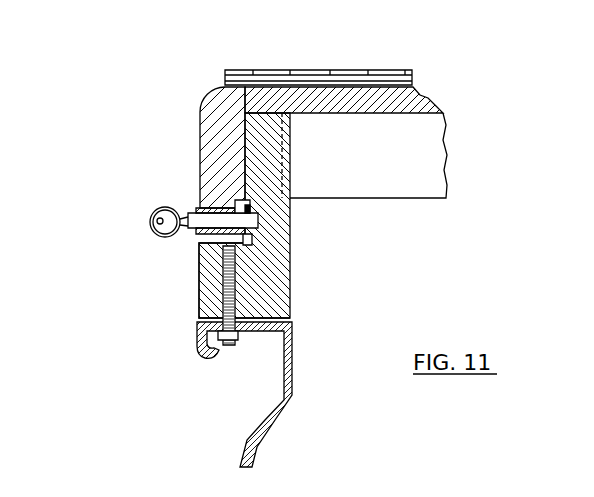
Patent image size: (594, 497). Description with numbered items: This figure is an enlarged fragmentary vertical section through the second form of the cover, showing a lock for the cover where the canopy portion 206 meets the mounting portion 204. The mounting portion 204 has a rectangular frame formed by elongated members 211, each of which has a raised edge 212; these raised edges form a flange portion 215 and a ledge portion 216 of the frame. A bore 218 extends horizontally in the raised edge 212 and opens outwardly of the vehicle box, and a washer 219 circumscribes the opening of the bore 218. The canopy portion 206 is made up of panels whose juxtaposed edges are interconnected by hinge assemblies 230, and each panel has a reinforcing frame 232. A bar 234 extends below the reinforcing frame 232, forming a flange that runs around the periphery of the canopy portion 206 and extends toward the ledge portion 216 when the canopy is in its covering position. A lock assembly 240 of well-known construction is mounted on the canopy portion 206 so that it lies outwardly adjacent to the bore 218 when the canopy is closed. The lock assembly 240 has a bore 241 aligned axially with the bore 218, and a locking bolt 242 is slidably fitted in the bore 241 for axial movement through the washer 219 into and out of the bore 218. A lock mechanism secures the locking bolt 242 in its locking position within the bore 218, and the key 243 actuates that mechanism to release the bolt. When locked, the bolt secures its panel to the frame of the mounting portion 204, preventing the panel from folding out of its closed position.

The mounting portion 204 is at (187, 302).
The canopy portion 206 is at (177, 93).
The elongated member 211 is at (270, 270).
The raised edge 212 is at (268, 212).
The flange portion 215 is at (266, 205).
The ledge portion 216 is at (203, 243).
The bore 218 is at (272, 226).
The washer 219 is at (275, 243).
The hinge assembly 230 is at (387, 70).
The reinforcing frame 232 is at (458, 132).
The bar 234 is at (372, 143).
The lock assembly 240 is at (143, 235).
The bore 241 is at (200, 208).
The locking bolt 242 is at (188, 233).
The key 243 is at (155, 210).